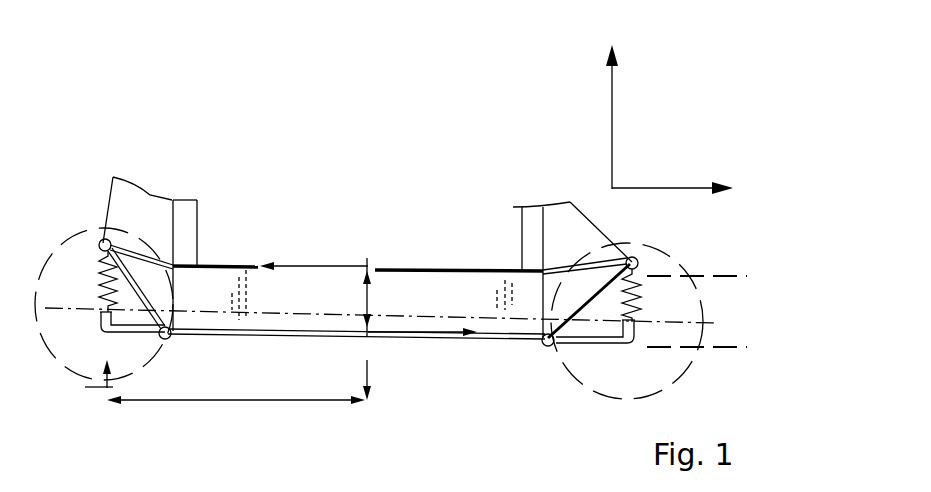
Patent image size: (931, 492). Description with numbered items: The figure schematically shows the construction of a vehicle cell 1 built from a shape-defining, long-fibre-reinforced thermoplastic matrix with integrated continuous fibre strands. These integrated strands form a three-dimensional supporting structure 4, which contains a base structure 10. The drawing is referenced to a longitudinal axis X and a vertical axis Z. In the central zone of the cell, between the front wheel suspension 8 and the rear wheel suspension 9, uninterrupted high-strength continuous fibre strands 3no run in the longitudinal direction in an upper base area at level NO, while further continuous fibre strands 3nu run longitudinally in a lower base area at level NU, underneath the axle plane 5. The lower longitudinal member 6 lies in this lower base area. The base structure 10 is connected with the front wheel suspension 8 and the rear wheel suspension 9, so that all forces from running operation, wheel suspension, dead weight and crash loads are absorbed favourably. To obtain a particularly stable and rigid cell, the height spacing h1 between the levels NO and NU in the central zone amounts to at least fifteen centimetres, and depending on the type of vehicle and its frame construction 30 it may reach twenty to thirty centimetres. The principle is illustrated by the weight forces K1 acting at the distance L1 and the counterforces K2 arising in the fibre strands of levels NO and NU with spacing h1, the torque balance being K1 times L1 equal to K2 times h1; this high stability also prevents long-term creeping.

The vehicle cell 1 is at (283, 157).
The frame construction 30 is at (182, 208).
The three-dimensional supporting structure 4 is at (368, 243).
The continuous fibre strands running in longitudinal direction in the upper base are 3no is at (237, 263).
The continuous fibre strands running in longitudinal direction in the lower base are 3nu is at (356, 355).
The lower longitudinal frame member 6 is at (318, 338).
The axle plane 5 is at (65, 304).
The rear wheel suspension 9 is at (102, 325).
The front wheel suspension 8 is at (613, 347).
The base structure 10 is at (514, 352).
The weight forces K1 is at (110, 370).
The counterforces K2 is at (308, 260).
The height spacing h1 is at (369, 298).
The distance L1 is at (197, 400).
The level of the upper base area NO is at (716, 266).
The level of the lower base area NU is at (716, 340).
The X axis X is at (684, 193).
The Z axis Z is at (610, 99).